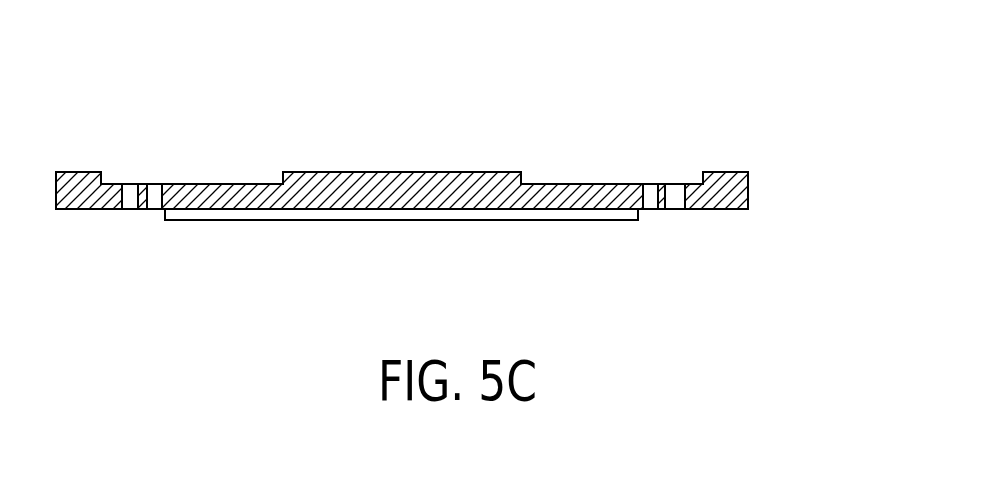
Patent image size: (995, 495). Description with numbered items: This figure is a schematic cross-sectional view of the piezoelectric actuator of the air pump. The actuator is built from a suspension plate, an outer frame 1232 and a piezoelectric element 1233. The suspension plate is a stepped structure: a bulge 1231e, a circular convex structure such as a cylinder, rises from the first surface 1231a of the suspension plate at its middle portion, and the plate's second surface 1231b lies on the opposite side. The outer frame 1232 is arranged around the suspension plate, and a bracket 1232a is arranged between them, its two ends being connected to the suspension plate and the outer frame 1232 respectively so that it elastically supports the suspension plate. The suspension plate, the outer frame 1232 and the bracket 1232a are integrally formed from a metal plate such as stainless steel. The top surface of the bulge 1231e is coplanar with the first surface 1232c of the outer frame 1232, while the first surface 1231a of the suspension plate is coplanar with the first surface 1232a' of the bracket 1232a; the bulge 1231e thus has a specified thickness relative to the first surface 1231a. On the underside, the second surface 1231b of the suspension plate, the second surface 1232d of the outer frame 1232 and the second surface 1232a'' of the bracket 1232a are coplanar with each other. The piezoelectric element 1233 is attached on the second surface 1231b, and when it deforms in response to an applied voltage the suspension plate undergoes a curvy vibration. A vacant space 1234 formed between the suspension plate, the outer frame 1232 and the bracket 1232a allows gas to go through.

The first surface of the suspension plate 1231a is at (560, 184).
The second surface of the suspension plate 1231b is at (562, 210).
The bulge 1231e is at (373, 172).
The outer frame 1232 is at (732, 190).
The bracket 1232a is at (706, 237).
The first surface of the bracket 1232a' is at (684, 130).
The second surface of the bracket 1232a'' is at (625, 238).
The first surface of the outer frame 1232c is at (727, 173).
The second surface of the outer frame 1232d is at (730, 210).
The piezoelectric element 1233 is at (427, 216).
The vacant space 1234 is at (674, 192).